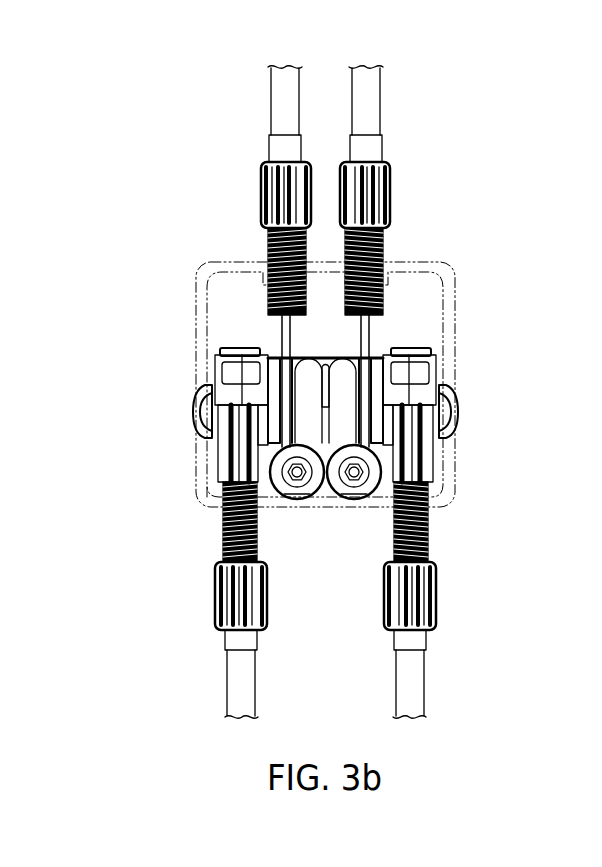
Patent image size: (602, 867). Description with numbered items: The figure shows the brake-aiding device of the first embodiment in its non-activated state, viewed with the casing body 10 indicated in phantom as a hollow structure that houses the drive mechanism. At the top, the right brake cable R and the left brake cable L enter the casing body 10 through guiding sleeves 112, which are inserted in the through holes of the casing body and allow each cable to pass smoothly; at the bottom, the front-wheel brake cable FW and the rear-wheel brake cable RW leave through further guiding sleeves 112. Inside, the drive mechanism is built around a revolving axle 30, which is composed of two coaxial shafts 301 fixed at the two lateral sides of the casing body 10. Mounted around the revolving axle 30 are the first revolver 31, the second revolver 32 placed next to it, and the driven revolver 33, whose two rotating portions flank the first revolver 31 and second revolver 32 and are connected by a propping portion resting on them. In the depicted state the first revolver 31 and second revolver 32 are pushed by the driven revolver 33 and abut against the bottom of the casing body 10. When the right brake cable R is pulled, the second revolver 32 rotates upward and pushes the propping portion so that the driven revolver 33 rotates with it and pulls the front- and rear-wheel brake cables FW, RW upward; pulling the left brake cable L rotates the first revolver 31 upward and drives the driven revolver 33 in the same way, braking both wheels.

The casing body 10 is at (447, 295).
The guiding sleeves 112 is at (280, 190).
The revolving axle 30 is at (326, 415).
The shafts 301 is at (203, 410).
The driven revolver 33 is at (203, 362).
The first revolver 31 is at (354, 503).
The second revolver 32 is at (297, 503).
The right brake cable R is at (288, 90).
The left brake cable L is at (363, 94).
The front-wheel brake cable FW is at (237, 687).
The rear-wheel brake cable RW is at (416, 687).